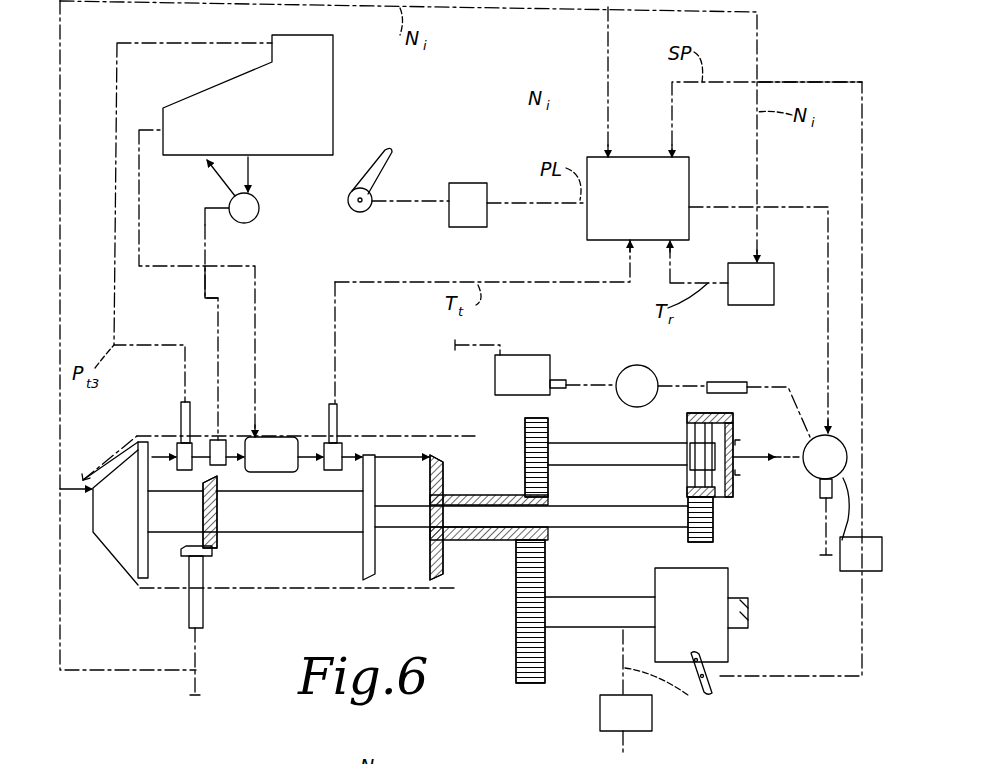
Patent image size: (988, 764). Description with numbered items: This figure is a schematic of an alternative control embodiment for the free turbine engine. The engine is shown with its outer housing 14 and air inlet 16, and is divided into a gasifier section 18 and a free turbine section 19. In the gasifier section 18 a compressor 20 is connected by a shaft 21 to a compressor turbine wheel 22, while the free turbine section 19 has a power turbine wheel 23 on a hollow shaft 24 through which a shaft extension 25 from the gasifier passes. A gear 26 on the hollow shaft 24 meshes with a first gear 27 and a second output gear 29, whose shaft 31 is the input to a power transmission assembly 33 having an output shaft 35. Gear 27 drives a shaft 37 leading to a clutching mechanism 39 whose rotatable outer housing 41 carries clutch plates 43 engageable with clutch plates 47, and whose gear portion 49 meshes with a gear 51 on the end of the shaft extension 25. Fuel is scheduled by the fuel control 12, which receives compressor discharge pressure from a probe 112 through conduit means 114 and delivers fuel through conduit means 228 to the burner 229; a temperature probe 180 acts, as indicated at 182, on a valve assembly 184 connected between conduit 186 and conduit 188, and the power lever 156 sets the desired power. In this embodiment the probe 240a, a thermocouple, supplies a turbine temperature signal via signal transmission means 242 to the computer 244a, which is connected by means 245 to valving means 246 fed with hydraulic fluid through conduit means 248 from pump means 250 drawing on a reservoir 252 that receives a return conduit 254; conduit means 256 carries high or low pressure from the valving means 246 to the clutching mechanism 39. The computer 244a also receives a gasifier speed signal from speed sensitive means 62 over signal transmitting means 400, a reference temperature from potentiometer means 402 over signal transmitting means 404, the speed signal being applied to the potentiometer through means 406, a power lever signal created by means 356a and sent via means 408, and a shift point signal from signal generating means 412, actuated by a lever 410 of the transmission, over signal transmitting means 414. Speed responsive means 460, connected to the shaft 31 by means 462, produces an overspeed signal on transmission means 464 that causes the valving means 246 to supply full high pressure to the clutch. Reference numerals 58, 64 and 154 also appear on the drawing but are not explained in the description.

The fuel control 12 is at (338, 98).
The outer housing 14 is at (135, 590).
The air inlet 16 is at (80, 540).
The gasifier section 18 is at (290, 563).
The free turbine section 19 is at (480, 565).
The compressor 20 is at (120, 575).
The shaft 21 is at (330, 528).
The compressor turbine wheel 22 is at (369, 582).
The power turbine wheel 23 is at (438, 582).
The hollow shaft 24 is at (475, 495).
The shaft extension 25 is at (408, 523).
The gear 26 is at (552, 498).
The first gear 27 is at (550, 428).
The second output gear 29 is at (545, 662).
The shaft 31 is at (600, 627).
The power transmission assembly 33 is at (718, 655).
The output shaft 35 is at (735, 600).
The shaft 37 is at (588, 452).
The clutching mechanism 39 is at (735, 505).
The rotatable outer housing 41 is at (735, 487).
The clutch plates 43 is at (698, 428).
The clutch plates 47 is at (705, 462).
The gear portion 49 is at (715, 420).
The gear 51 is at (688, 545).
The brake shaft 58 is at (196, 676).
The speed sensitive means 62 is at (213, 552).
The brake disc 64 is at (218, 518).
The probe 112 is at (177, 445).
The conduit means 114 is at (117, 180).
The lever axis 154 is at (355, 190).
The power selector lever 156 is at (392, 152).
The probe 180 is at (219, 440).
The schematic connection 182 is at (218, 306).
The valve assembly 184 is at (256, 218).
The conduit 186 is at (252, 167).
The conduit 188 is at (222, 180).
The conduit means 228 is at (258, 330).
The burner 229 is at (271, 435).
The probe 240a is at (338, 445).
The signal transmission means 242 is at (336, 350).
The computer 244a is at (598, 232).
The connecting means 245 is at (826, 312).
The valving means 246 is at (838, 437).
The conduit means 248 is at (728, 380).
The pump means 250 is at (648, 372).
The reservoir 252 is at (538, 360).
The return conduit 254 is at (480, 360).
The conduit means 256 is at (775, 460).
The power lever signal means 356a is at (470, 190).
The signal transmitting means 400 is at (608, 58).
The potentiometer means 402 is at (758, 272).
The signal transmitting means 404 is at (700, 283).
The signal transmitting means 406 is at (760, 170).
The signal transmitting means 408 is at (512, 205).
The lever 410 is at (710, 690).
The signal generating means 412 is at (848, 572).
The signal transmitting means 414 is at (838, 82).
The speed responsive means 460 is at (598, 708).
The connecting means 462 is at (661, 692).
The transmission means 464 is at (832, 552).